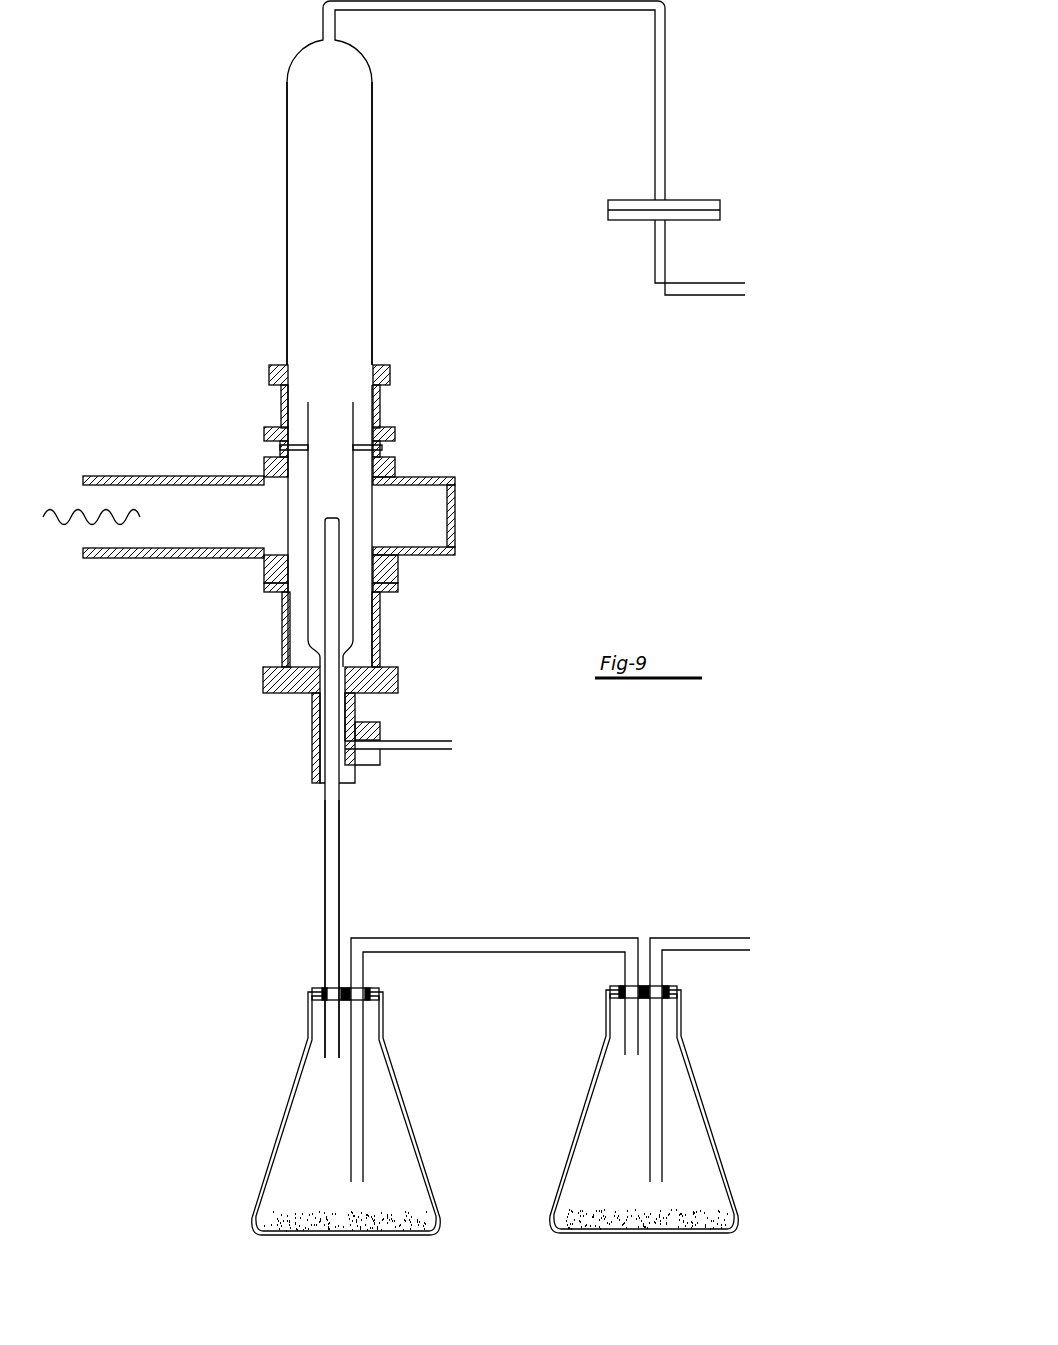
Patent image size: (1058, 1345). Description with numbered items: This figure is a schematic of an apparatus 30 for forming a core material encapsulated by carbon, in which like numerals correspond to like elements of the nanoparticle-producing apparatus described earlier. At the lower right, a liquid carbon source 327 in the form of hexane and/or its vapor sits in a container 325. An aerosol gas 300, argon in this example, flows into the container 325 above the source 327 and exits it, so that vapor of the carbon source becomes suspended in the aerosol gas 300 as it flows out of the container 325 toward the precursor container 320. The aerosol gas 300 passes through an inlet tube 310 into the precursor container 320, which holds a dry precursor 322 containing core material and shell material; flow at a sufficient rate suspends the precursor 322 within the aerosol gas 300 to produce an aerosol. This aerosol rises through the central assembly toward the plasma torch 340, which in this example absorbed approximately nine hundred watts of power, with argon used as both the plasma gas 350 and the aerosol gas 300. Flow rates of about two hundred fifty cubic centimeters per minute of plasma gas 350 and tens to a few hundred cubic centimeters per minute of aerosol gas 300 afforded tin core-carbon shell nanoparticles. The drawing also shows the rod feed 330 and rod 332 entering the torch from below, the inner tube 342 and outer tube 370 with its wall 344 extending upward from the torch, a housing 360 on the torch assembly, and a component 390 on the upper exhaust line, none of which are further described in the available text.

The apparatus for producing core-shell structured nanoparticles 30 is at (214, 146).
The outer tube 370 is at (357, 157).
The tube wall 344 is at (352, 293).
The valve 390 is at (620, 200).
The inner tube 342 is at (332, 432).
The plasma torch 340 is at (355, 478).
The housing 360 is at (455, 505).
The plasma gas 350 is at (458, 745).
The rod 332 is at (332, 817).
The rod feed 330 is at (320, 912).
The inlet tube 310 is at (477, 938).
The aerosol gas 300 is at (758, 944).
The precursor container 320 is at (408, 1105).
The precursor 322 is at (395, 1218).
The container 325 is at (705, 1105).
The liquid carbon source 327 is at (693, 1222).